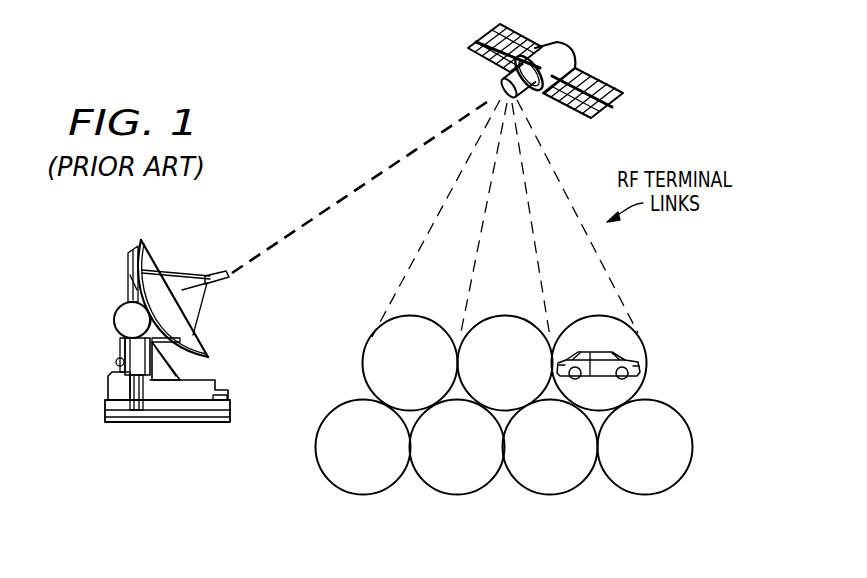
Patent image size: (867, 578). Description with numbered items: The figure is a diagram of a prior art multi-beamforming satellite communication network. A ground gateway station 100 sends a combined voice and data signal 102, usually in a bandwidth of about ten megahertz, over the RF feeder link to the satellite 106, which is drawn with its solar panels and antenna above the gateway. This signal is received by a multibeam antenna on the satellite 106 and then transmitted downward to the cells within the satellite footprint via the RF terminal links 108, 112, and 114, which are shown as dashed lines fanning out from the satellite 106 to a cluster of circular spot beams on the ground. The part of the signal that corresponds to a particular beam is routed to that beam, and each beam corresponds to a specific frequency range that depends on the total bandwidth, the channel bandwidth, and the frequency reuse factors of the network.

The ground gateway station 100 is at (114, 320).
The combined voice and data signal 102 is at (365, 180).
The satellite 106 is at (575, 52).
The RF terminal link 108 is at (363, 362).
The RF terminal link 112 is at (511, 316).
The RF terminal link 114 is at (647, 365).